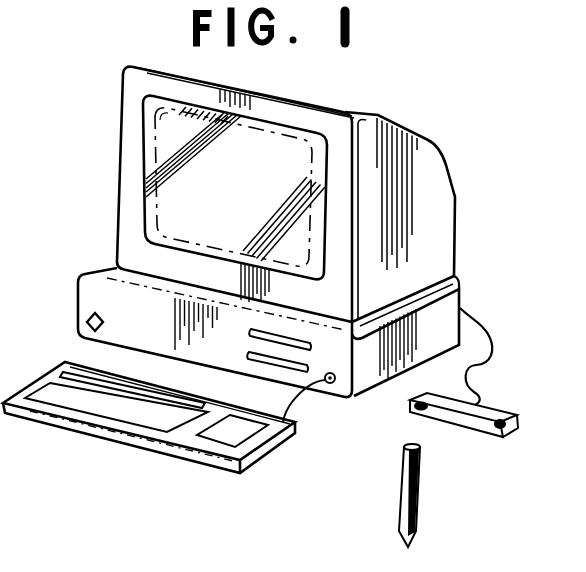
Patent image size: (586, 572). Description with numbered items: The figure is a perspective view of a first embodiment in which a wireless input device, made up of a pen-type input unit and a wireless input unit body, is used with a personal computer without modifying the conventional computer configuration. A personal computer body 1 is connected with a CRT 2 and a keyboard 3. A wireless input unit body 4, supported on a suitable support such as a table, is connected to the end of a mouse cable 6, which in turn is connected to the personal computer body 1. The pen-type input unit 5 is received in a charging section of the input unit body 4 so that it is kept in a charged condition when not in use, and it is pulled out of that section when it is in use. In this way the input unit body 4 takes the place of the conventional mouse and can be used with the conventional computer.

The personal computer body 1 is at (455, 305).
The CRT 2 is at (122, 185).
The keyboard 3 is at (113, 412).
The wireless input unit body 4 is at (465, 416).
The pen-type input unit 5 is at (422, 497).
The mouse cable 6 is at (493, 360).